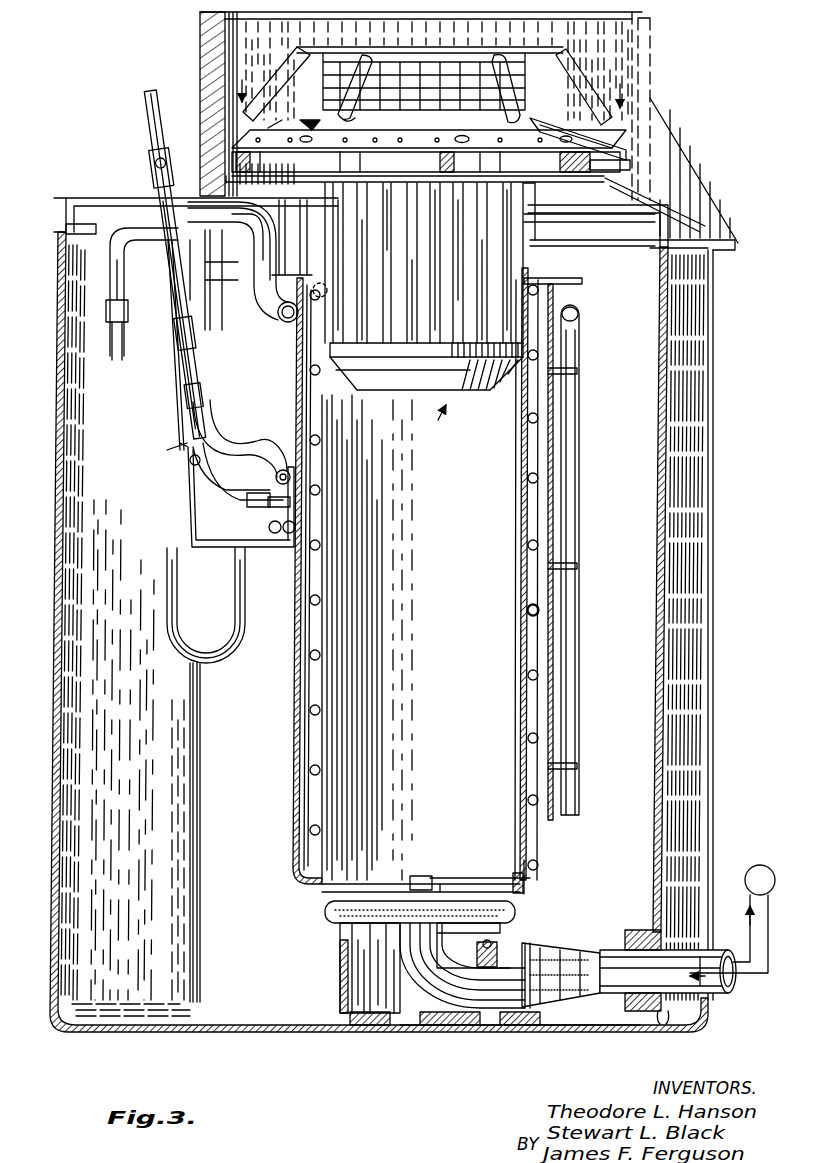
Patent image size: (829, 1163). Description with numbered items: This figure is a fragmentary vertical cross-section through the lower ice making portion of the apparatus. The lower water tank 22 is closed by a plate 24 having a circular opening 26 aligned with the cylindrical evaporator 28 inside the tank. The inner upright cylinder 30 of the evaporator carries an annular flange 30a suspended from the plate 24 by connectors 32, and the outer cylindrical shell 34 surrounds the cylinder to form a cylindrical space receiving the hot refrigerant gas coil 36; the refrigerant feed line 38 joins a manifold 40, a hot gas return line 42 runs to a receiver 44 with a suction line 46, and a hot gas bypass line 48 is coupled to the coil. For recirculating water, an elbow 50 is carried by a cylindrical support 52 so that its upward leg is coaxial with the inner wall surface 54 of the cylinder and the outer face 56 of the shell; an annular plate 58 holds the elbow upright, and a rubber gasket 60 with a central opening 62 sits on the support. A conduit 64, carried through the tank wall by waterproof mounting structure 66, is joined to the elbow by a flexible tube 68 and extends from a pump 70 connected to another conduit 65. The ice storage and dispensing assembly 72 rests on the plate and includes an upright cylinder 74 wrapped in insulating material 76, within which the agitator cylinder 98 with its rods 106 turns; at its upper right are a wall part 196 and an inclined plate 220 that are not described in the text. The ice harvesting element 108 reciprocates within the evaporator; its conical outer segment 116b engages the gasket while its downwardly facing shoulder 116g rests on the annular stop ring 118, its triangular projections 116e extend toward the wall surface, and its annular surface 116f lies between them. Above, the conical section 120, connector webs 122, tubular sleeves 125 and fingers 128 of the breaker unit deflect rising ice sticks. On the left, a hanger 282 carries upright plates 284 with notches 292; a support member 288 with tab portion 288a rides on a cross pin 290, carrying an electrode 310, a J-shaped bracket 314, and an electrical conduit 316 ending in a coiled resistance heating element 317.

The water tank 22 is at (56, 640).
The plate 24 is at (96, 200).
The circular opening 26 is at (548, 206).
The evaporator 28 is at (294, 790).
The inner upright cylinder 30 is at (322, 660).
The annular flange 30a is at (560, 280).
The connectors 32 is at (318, 240).
The outer cylindrical shell 34 is at (556, 484).
The hot refrigerant gas coil 36 is at (526, 606).
The refrigerant feed line 38 is at (278, 316).
The manifold 40 is at (580, 604).
The hot gas return line 42 is at (274, 212).
The receiver 44 is at (236, 636).
The suction line 46 is at (120, 290).
The hot gas bypass line 48 is at (110, 326).
The elbow 50 is at (448, 1028).
The cylindrical support 52 is at (340, 994).
The inner wall surface 54 is at (524, 514).
The outer face 56 is at (296, 700).
The annular plate 58 is at (392, 950).
The sealing member or gasket 60 is at (516, 920).
The central opening 62 is at (362, 908).
The conduit 64 is at (672, 944).
The conduit 65 is at (722, 992).
The waterproof mounting structure 66 is at (664, 1026).
The flexible tube 68 is at (556, 956).
The pump 70 is at (758, 864).
The ice storage and dispensing assembly 72 is at (461, 224).
The upright cylinder 74 is at (240, 55).
The insulating material 76 is at (200, 22).
The agitator cylinder 98 is at (528, 45).
The rods 106 is at (572, 68).
The ice harvesting element 108 is at (340, 55).
The conical outer segment 116b is at (380, 384).
The triangular projections 116e is at (508, 240).
The annular surface 116f is at (386, 345).
The downwardly facing shoulder 116g is at (512, 380).
The annular stop ring 118 is at (512, 876).
The conical section 120 is at (600, 140).
The connector webs 122 is at (305, 122).
The tubular sleeves 125 is at (626, 162).
The fingers 128 is at (400, 180).
The right wall 196 is at (652, 66).
The diagonal plate 220 is at (715, 215).
The hanger 282 is at (194, 396).
The upright plates 284 is at (256, 546).
The support member 288 is at (186, 352).
The outwardly bent tab portion 288a is at (166, 170).
The cross pin 290 is at (190, 462).
The notches 292 is at (167, 450).
The electrode 310 is at (268, 516).
The J-shaped bracket 314 is at (246, 512).
The electrical conduit 316 is at (146, 98).
The coiled resistance heating element 317 is at (268, 438).